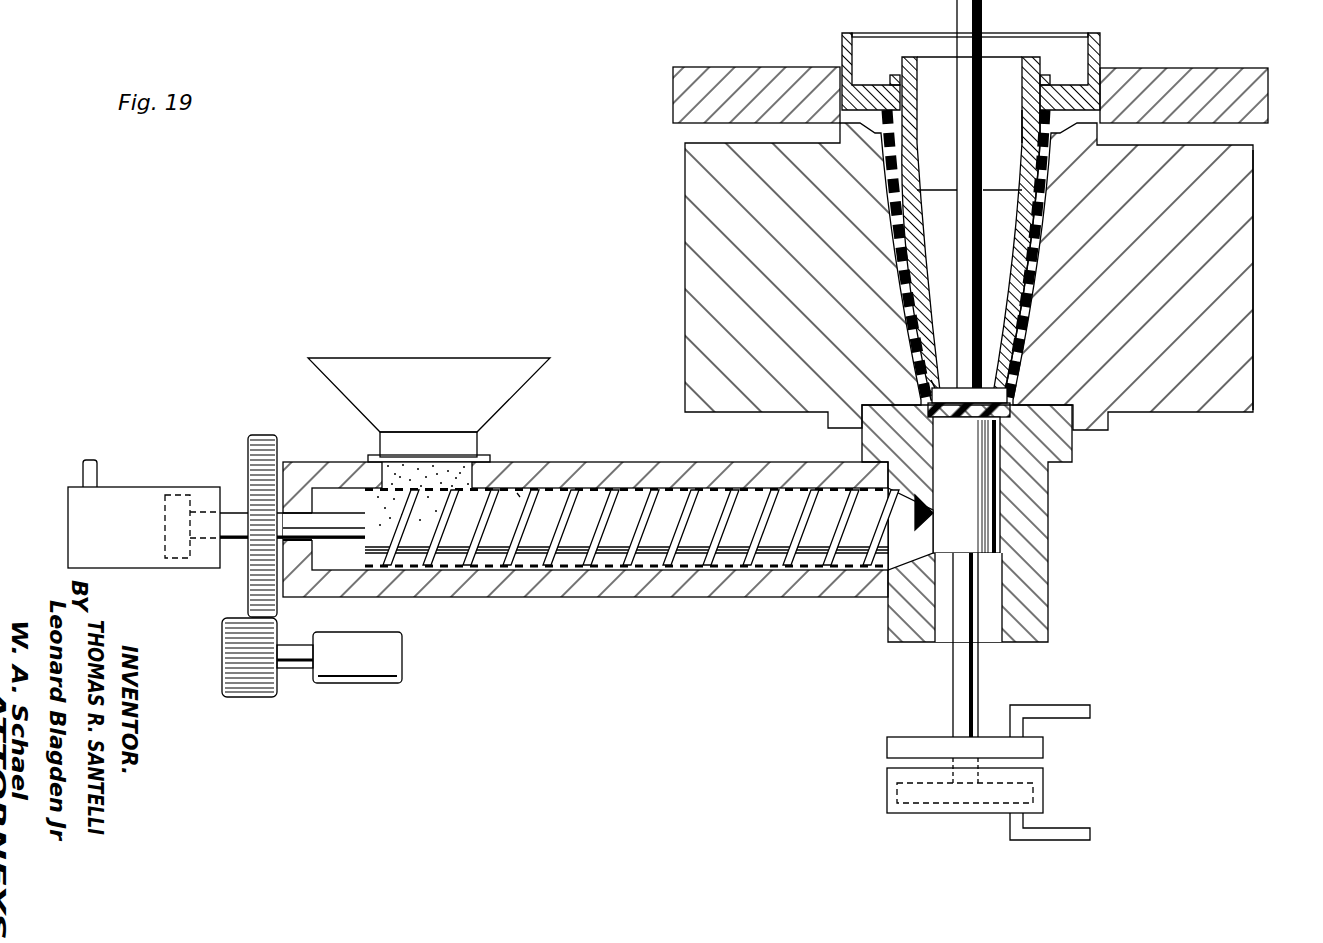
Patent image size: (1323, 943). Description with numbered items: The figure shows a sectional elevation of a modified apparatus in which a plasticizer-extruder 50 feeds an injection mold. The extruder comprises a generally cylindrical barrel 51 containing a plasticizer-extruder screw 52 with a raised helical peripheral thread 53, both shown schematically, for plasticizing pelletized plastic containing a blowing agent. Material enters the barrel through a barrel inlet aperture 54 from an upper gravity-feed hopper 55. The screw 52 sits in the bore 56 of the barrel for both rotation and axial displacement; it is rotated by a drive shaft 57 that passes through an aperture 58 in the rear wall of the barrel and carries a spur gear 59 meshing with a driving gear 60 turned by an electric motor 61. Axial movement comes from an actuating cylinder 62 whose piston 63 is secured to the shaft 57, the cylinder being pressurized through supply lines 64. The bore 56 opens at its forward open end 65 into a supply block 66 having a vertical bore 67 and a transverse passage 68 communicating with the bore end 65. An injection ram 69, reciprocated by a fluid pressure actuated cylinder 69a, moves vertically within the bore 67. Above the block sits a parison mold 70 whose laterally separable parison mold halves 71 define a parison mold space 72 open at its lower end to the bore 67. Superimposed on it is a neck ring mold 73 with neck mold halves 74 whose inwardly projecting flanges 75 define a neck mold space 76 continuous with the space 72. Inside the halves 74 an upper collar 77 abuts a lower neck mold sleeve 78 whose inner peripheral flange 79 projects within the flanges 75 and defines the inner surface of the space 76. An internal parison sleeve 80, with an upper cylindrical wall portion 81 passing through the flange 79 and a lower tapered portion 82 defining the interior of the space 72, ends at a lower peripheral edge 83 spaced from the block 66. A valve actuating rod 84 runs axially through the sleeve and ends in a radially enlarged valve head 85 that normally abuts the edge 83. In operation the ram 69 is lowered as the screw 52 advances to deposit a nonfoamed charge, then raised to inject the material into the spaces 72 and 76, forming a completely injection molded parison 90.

The plasticizer-extruder 50 is at (559, 485).
The barrel 51 is at (620, 463).
The plasticizer-extruder screw 52 is at (632, 530).
The raised helical peripheral thread 53 is at (670, 540).
The barrel inlet aperture 54 is at (462, 470).
The gravity-feed hopper 55 is at (450, 362).
The bore 56 is at (517, 495).
The drive shaft 57 is at (332, 522).
The aperture 58 is at (306, 546).
The spur gear 59 is at (248, 594).
The driving gear 60 is at (240, 697).
The electric motor 61 is at (357, 668).
The actuating cylinder 62 is at (119, 507).
The piston 63 is at (165, 535).
The supply lines 64 is at (83, 466).
The forward open end 65 is at (900, 563).
The supply block 66 is at (963, 535).
The vertical bore 67 is at (996, 598).
The transverse passage 68 is at (905, 568).
The injection ram 69 is at (956, 497).
The fluid pressure actuated cylinder 69a is at (1030, 775).
The parison mold 70 is at (1255, 363).
The parison mold halves 71 is at (692, 250).
The parison mold space 72 is at (1028, 278).
The neck ring mold 73 is at (994, 79).
The neck mold halves 74 is at (728, 68).
The inwardly projecting flanges 75 is at (1048, 140).
The neck mold space 76 is at (1050, 118).
The upper collar 77 is at (852, 40).
The lower neck mold sleeve 78 is at (848, 92).
The inner peripheral flange 79 is at (900, 125).
The internal parison sleeve 80 is at (993, 59).
The upper cylindrical wall portion 81 is at (1034, 62).
The lower tapered portion 82 is at (913, 240).
The lower peripheral edge 83 is at (935, 385).
The valve actuating rod 84 is at (974, 237).
The valve head 85 is at (997, 394).
The injection molded parison 90 is at (1030, 315).